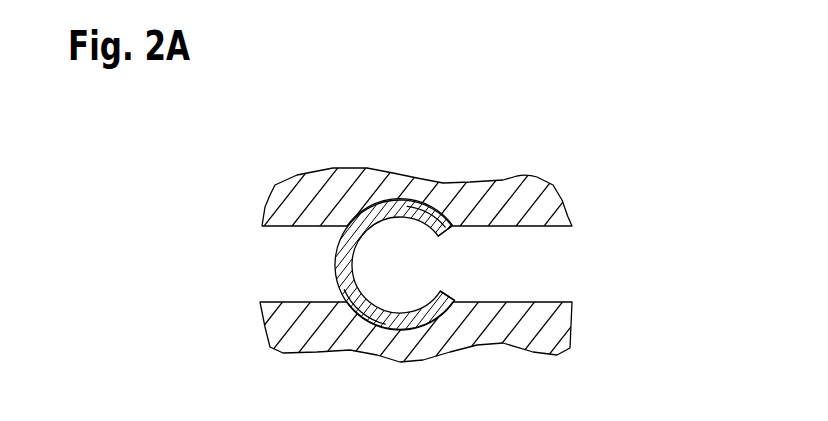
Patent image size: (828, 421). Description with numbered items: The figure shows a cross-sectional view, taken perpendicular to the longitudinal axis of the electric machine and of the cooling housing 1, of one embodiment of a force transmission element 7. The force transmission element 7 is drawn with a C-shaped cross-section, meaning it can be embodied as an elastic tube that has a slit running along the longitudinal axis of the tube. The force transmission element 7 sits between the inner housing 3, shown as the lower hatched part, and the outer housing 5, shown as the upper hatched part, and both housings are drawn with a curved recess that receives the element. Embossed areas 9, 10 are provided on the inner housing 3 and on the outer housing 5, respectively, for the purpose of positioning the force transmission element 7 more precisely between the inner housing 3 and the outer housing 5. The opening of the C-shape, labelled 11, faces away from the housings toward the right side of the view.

The cooling housing 1 is at (598, 170).
The inner housing 3 is at (285, 328).
The outer housing 5 is at (300, 203).
The force transmission element 7 is at (338, 262).
The embossed area 9 is at (355, 316).
The embossed area 10 is at (450, 222).
The slot / opening of sleeve 11 is at (491, 270).